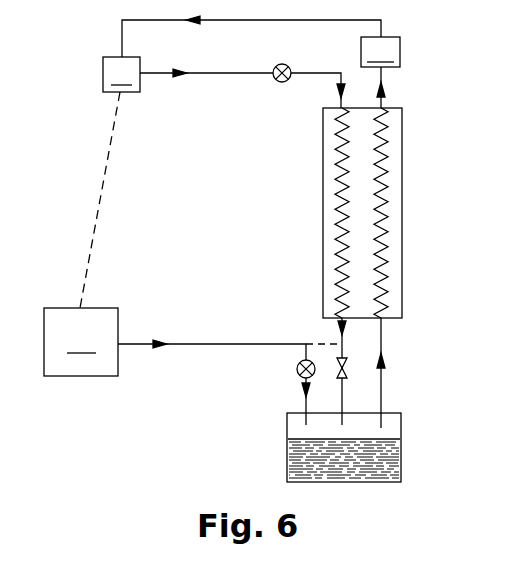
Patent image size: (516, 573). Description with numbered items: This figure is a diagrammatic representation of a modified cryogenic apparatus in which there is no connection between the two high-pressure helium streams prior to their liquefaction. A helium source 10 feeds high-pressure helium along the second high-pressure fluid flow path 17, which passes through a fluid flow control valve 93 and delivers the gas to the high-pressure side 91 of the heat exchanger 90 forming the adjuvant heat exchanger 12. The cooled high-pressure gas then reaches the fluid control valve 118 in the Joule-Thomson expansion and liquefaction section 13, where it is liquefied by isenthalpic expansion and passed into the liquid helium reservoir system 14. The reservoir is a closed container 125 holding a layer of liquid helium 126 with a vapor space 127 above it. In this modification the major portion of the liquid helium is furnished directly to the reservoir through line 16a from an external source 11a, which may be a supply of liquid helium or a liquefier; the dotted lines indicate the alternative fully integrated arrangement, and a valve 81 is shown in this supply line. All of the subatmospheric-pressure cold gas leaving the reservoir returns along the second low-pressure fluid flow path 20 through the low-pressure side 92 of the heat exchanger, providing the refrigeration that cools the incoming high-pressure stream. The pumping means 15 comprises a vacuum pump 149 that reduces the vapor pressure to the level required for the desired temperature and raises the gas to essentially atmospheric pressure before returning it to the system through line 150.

The helium source 10 is at (121, 74).
The external source 11a is at (81, 342).
The adjuvant heat exchanger 12 is at (431, 195).
The Joule-Thomson expansion and liquefaction section 13 is at (425, 367).
The liquid helium reservoir system 14 is at (264, 441).
The pumping means 15 is at (430, 41).
The supply line 16a is at (245, 343).
The second high-pressure fluid flow path 17 is at (233, 76).
The second low-pressure fluid flow path 20 is at (382, 338).
The valve 81 is at (297, 368).
The heat exchanger 90 is at (397, 242).
The high-pressure side 91 is at (338, 186).
The low-pressure side 92 is at (387, 292).
The fluid flow control valve 93 is at (281, 83).
The fluid control valve 118 is at (346, 376).
The closed container 125 is at (395, 469).
The layer of liquid helium 126 is at (395, 451).
The vapor space 127 is at (393, 426).
The vacuum pump 149 is at (380, 52).
The line 150 is at (215, 22).